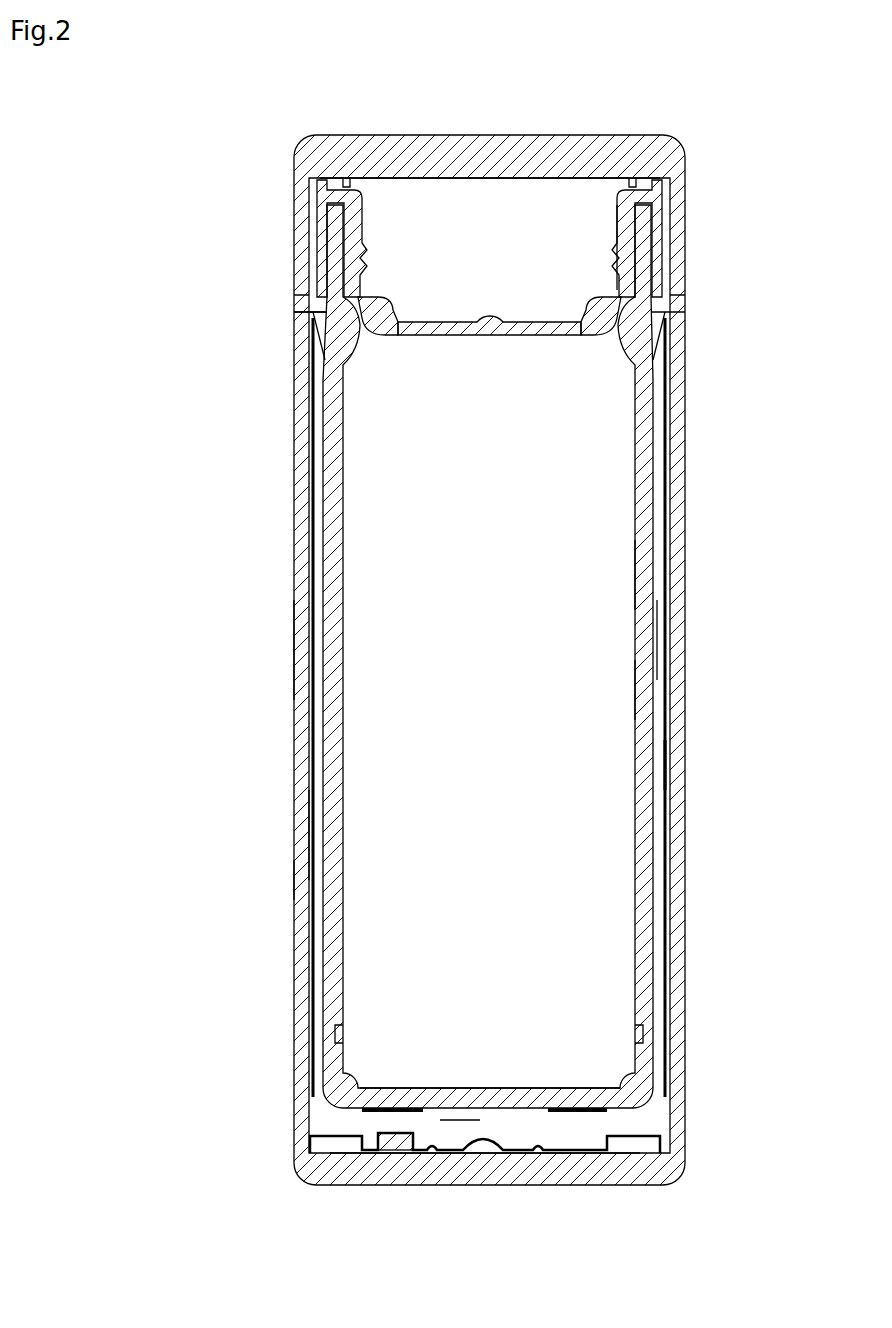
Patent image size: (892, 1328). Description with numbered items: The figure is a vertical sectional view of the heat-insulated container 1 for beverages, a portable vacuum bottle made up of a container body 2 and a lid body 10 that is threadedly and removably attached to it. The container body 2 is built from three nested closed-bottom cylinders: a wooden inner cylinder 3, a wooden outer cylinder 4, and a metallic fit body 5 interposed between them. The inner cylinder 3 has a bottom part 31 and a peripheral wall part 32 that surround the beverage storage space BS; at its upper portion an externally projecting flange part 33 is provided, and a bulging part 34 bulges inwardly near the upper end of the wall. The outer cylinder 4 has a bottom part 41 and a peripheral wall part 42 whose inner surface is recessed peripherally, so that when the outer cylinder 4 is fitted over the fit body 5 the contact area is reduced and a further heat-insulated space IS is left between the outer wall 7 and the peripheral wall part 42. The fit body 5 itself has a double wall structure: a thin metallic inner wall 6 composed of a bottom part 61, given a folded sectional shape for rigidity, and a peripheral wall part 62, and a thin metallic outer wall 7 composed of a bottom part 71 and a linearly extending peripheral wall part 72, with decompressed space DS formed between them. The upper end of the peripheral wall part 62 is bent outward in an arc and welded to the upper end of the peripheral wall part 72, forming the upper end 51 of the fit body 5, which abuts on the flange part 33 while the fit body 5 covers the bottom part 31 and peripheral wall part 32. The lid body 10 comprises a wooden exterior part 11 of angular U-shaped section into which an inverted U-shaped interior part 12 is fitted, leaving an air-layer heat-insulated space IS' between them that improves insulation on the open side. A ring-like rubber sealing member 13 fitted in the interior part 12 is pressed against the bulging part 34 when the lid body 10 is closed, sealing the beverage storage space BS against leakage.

The heat-insulated container for beverages 1 is at (442, 683).
The container body 2 is at (296, 745).
The inner cylinder 3 is at (488, 656).
The outer cylinder 4 is at (297, 655).
The fit body 5 is at (302, 835).
The inner wall 6 is at (645, 690).
The outer wall 7 is at (519, 769).
The lid body 10 is at (473, 258).
The exterior part 11 is at (300, 150).
The interior part 12 is at (437, 336).
The sealing member 13 is at (603, 338).
The bottom part 31 is at (410, 1090).
The peripheral wall part 32 is at (636, 576).
The flange part 33 is at (684, 305).
The bulging part 34 is at (357, 338).
The bottom part 41 is at (580, 1170).
The peripheral wall part 42 is at (296, 880).
The upper end 51 is at (303, 312).
The bottom part 61 is at (518, 1108).
The peripheral wall part 62 is at (335, 650).
The bottom part 71 is at (340, 1137).
The peripheral wall part 72 is at (668, 762).
The heat-insulated space IS is at (691, 640).
The heat-insulated space IS' is at (491, 238).
The beverage storage space BS is at (502, 727).
The decompressed space DS is at (452, 1128).